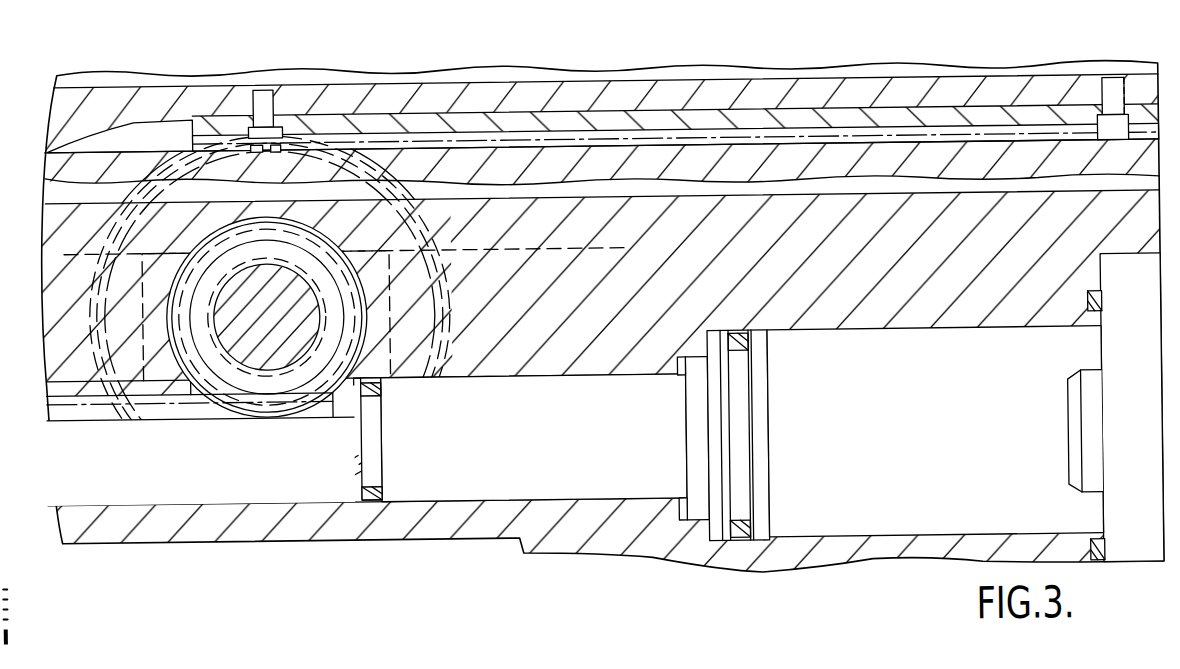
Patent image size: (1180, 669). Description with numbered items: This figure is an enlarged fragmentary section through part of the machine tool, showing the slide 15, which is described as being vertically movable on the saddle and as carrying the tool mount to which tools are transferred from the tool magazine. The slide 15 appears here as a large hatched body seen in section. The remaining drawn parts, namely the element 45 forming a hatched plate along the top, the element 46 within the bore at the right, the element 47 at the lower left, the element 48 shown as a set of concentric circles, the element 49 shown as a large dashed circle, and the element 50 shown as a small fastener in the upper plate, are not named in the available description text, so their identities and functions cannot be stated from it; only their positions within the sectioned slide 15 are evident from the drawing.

The slide 15 is at (1009, 245).
The top plate 45 is at (725, 91).
The piston assembly 46 is at (739, 402).
The sleeve slot 47 is at (94, 434).
The pin bushing 48 is at (230, 350).
The eccentric disc 49 is at (354, 184).
The bolt 50 is at (337, 135).